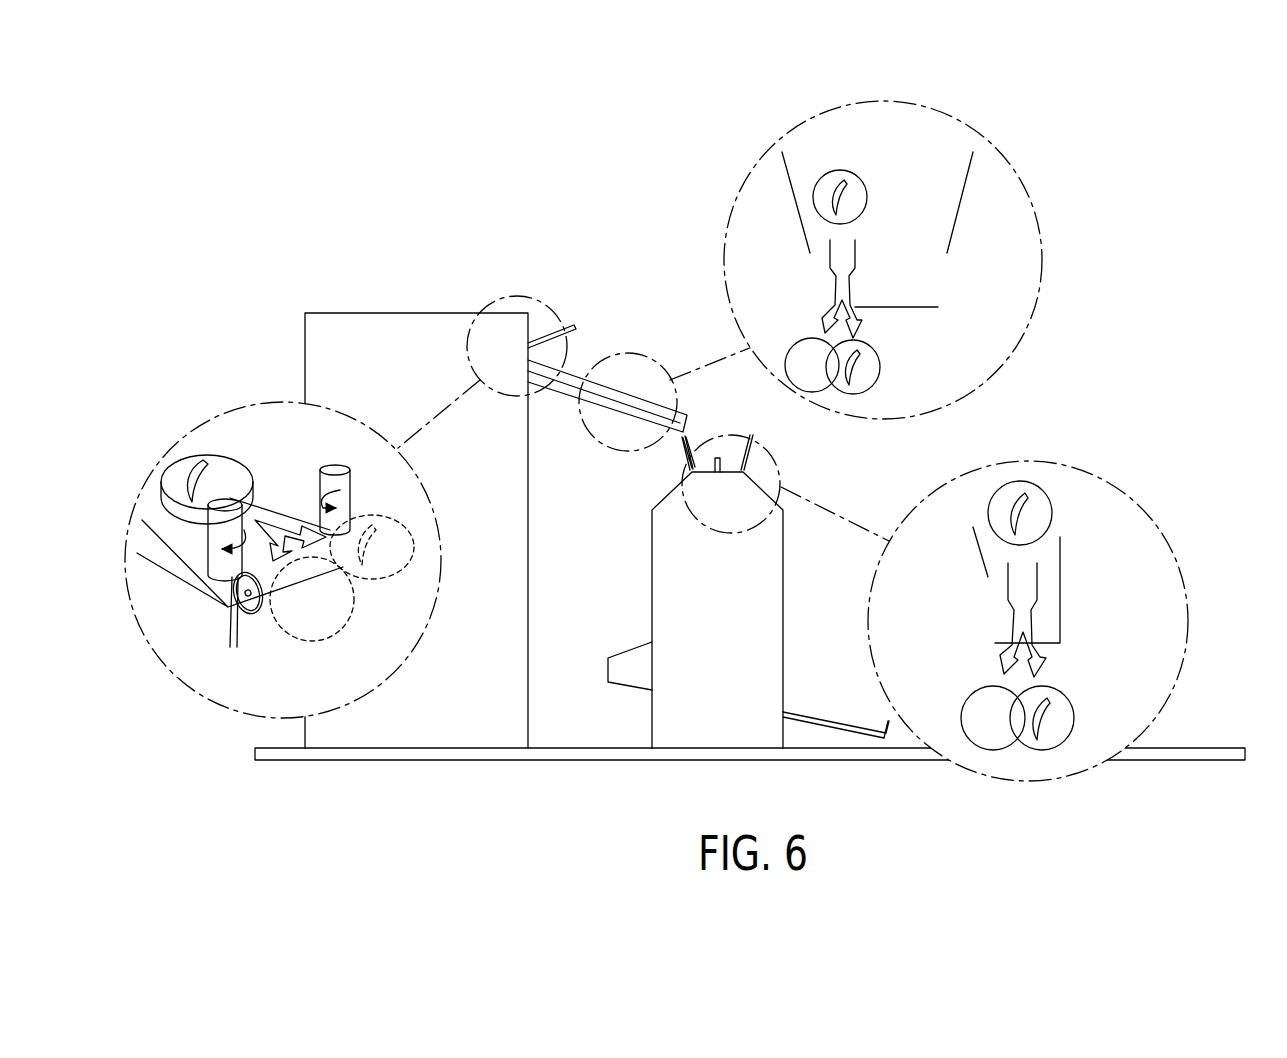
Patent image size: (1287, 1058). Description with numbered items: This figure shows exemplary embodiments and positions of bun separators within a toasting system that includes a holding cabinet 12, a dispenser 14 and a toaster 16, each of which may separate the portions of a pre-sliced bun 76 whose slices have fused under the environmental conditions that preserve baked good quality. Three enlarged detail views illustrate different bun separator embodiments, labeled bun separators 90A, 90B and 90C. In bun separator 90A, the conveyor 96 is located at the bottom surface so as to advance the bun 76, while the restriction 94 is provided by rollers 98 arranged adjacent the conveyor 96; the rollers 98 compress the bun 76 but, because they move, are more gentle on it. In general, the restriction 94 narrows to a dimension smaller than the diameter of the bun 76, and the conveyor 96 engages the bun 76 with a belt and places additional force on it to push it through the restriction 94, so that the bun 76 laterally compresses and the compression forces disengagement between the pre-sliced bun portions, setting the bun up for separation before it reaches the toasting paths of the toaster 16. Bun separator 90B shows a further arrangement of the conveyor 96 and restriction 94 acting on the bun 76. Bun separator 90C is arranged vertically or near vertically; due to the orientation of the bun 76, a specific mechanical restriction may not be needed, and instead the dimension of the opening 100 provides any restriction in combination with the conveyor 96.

The holding cabinet 12 is at (392, 333).
The dispenser 14 is at (603, 321).
The toaster 16 is at (683, 582).
The bun 76 is at (856, 185).
The bun separator 90A is at (268, 450).
The bun separator 90B is at (831, 139).
The bun separator 90C is at (1044, 444).
The restriction 94 is at (297, 494).
The conveyor 96 is at (197, 572).
The rollers 98 is at (220, 537).
The opening 100 is at (1047, 616).